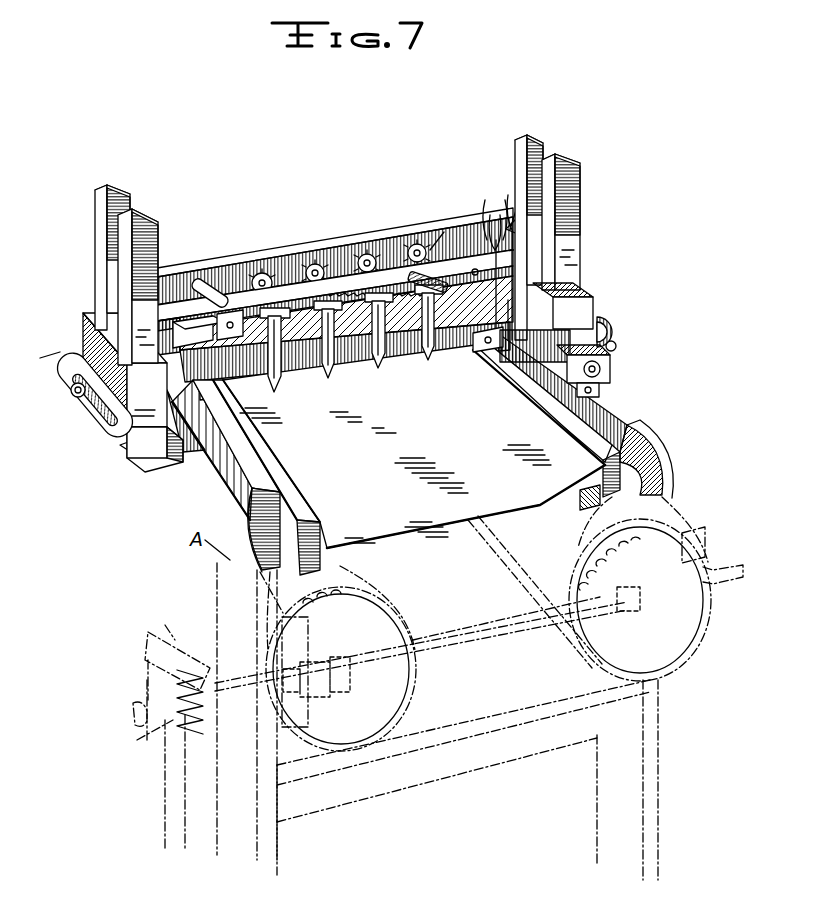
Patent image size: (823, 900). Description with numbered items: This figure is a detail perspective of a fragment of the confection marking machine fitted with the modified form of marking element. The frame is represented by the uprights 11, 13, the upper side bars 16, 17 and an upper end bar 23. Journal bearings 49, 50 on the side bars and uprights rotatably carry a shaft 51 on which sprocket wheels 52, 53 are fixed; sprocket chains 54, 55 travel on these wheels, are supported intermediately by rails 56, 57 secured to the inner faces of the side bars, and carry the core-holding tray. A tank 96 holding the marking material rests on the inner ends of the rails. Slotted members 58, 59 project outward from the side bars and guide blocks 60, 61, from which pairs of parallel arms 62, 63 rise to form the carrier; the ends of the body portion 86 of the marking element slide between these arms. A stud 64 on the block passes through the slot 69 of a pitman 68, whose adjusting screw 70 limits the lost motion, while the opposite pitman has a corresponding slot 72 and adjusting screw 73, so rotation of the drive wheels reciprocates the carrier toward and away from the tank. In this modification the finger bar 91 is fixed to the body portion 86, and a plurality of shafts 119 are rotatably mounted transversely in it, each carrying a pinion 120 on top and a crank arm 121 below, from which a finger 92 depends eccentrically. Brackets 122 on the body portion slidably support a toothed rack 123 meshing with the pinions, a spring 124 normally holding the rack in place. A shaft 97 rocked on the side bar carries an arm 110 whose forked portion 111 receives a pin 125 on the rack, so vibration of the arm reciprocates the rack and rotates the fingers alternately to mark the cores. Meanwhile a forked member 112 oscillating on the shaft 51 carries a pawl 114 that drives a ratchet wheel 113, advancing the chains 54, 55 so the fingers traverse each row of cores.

The upright 11 is at (279, 852).
The upright 13 is at (659, 830).
The upper side bar 16 is at (195, 505).
The upper side bar 17 is at (645, 440).
The upper end bar 23 is at (452, 780).
The journal bearing 49 is at (255, 600).
The journal bearing 50 is at (706, 537).
The shaft 51 is at (520, 642).
The sprocket wheel 52 is at (412, 693).
The sprocket wheel 53 is at (695, 648).
The sprocket chain 54 is at (382, 597).
The sprocket chain 55 is at (512, 553).
The rail 56 is at (335, 560).
The rail 57 is at (640, 502).
The slotted member 58 is at (162, 472).
The slotted member 59 is at (612, 368).
The block 60 is at (98, 320).
The block 61 is at (585, 300).
The arms 62 is at (130, 212).
The arms 63 is at (562, 152).
The stud 64 is at (77, 398).
The pitman 68 is at (62, 364).
The slot 69 is at (108, 425).
The adjusting screw 70 is at (130, 452).
The slot 72 is at (608, 324).
The adjusting screw 73 is at (617, 346).
The body portion 86 is at (211, 264).
The finger bar 91 is at (392, 257).
The fingers 92 is at (326, 374).
The tank 96 is at (392, 352).
The shaft 97 is at (600, 388).
The arm 110 is at (563, 275).
The forked portion 111 is at (518, 213).
The forked member 112 is at (146, 816).
The ratchet wheel 113 is at (170, 722).
The pawl 114 is at (177, 657).
The shafts 119 is at (432, 252).
The pinion 120 is at (266, 273).
The crank arm 121 is at (322, 324).
The brackets 122 is at (216, 285).
The toothed rack 123 is at (297, 286).
The spring 124 is at (440, 290).
The pin 125 is at (557, 214).